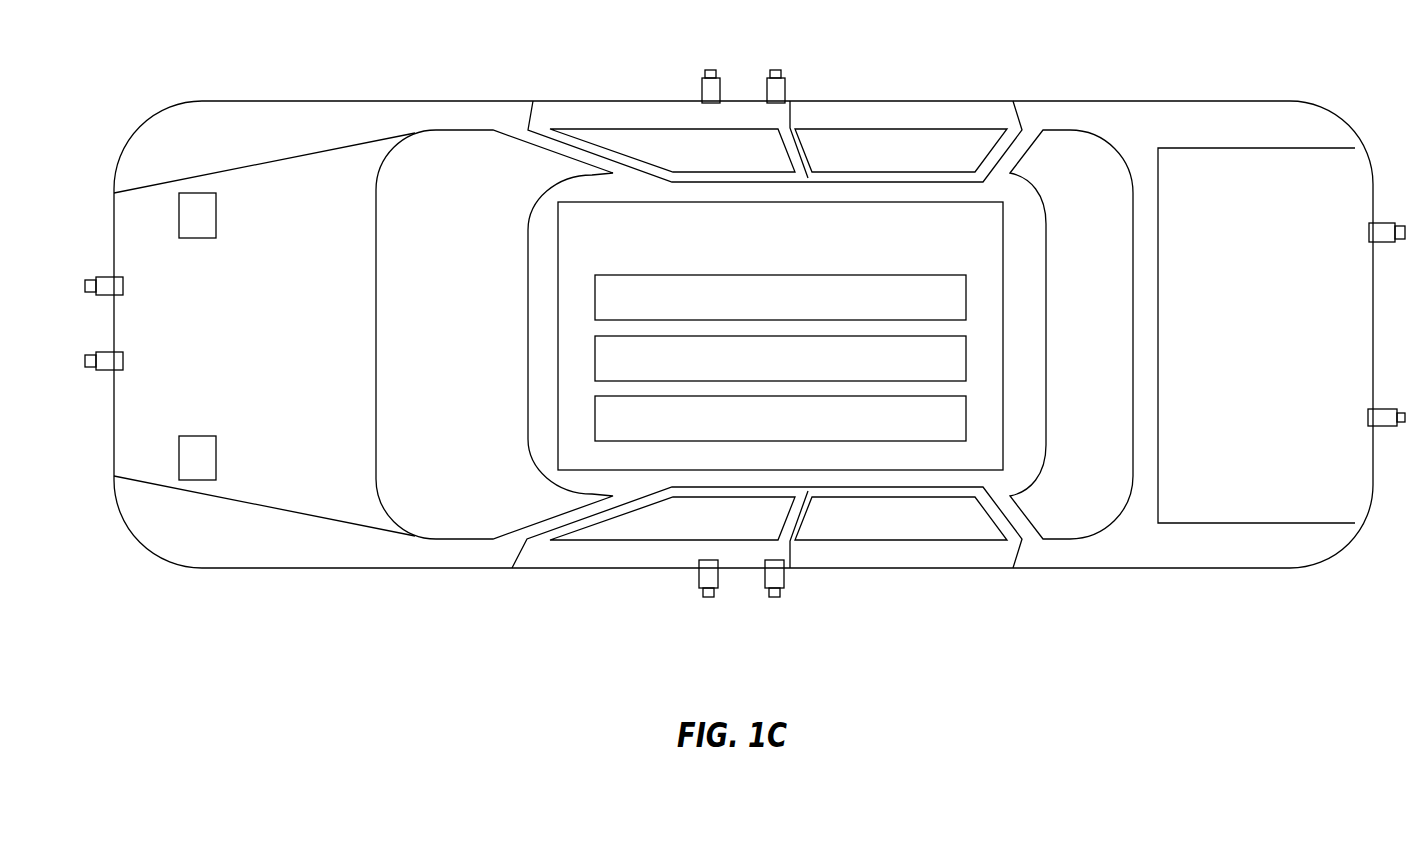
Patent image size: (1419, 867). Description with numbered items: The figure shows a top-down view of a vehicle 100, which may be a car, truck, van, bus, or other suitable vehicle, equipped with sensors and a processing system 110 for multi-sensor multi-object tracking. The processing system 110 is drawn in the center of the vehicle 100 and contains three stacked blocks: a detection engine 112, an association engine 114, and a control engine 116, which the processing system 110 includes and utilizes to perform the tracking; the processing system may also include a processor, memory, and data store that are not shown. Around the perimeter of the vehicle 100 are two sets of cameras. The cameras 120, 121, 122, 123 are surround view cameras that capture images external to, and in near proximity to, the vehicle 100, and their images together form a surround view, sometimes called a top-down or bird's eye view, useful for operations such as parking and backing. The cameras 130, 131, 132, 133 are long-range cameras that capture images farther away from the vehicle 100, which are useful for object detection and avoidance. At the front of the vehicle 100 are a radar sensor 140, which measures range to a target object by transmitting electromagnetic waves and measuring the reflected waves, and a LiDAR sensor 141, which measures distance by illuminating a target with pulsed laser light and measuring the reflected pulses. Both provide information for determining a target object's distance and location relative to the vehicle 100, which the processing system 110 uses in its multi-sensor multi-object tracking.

The vehicle 100 is at (262, 100).
The processing system 110 is at (797, 233).
The detection engine 112 is at (952, 308).
The association engine 114 is at (952, 368).
The control engine 116 is at (952, 428).
The camera 120 is at (105, 276).
The camera 121 is at (708, 598).
The camera 122 is at (710, 69).
The camera 123 is at (1381, 243).
The camera 130 is at (105, 351).
The camera 131 is at (775, 598).
The camera 132 is at (775, 69).
The camera 133 is at (1381, 427).
The radar sensor 140 is at (187, 192).
The LiDAR sensor 141 is at (187, 435).